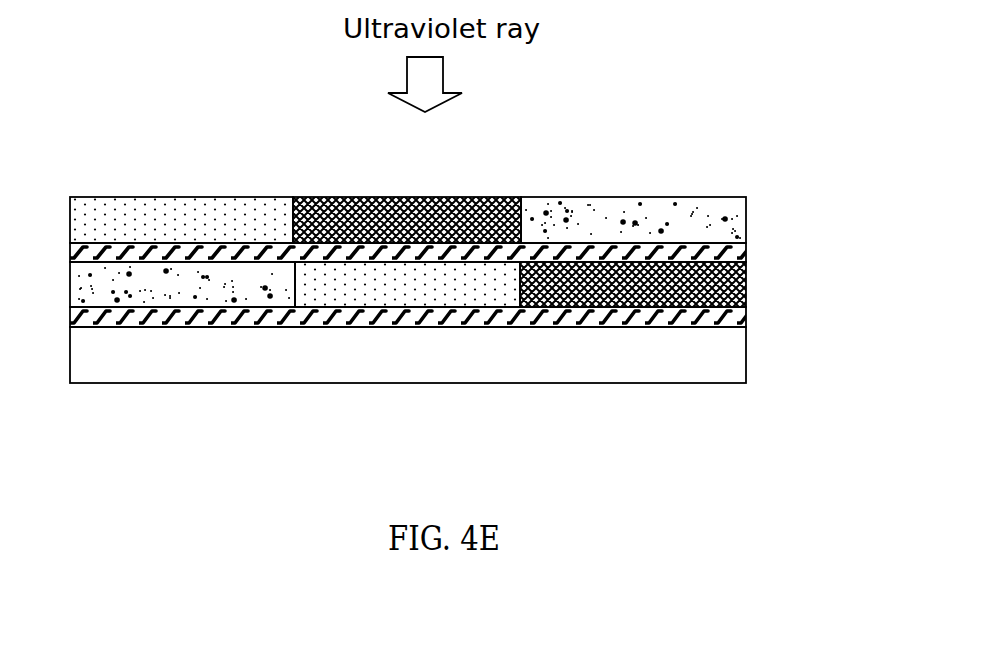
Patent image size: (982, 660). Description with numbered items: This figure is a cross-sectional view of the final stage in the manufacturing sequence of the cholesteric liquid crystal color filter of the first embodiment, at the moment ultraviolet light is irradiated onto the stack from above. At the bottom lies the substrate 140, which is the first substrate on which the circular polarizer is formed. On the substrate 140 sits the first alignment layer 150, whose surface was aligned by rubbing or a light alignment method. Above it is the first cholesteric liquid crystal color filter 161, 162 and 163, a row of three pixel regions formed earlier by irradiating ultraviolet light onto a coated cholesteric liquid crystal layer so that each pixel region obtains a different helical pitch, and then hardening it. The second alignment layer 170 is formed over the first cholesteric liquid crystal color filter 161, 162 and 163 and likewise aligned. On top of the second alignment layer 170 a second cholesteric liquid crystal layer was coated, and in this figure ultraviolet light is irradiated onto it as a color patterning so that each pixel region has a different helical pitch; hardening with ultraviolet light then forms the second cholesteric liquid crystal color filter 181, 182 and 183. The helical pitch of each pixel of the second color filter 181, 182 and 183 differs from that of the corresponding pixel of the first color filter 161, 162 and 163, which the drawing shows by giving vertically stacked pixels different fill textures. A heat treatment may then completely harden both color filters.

The substrate 140 is at (728, 362).
The first alignment layer 150 is at (733, 323).
The first cholesteric liquid crystal color filter 161 is at (203, 293).
The first cholesteric liquid crystal color filter 162 is at (403, 296).
The first cholesteric liquid crystal color filter 163 is at (633, 312).
The second alignment layer 170 is at (727, 256).
The second cholesteric liquid crystal color filter 181 is at (188, 225).
The second cholesteric liquid crystal color filter 182 is at (400, 222).
The second cholesteric liquid crystal color filter 183 is at (633, 225).